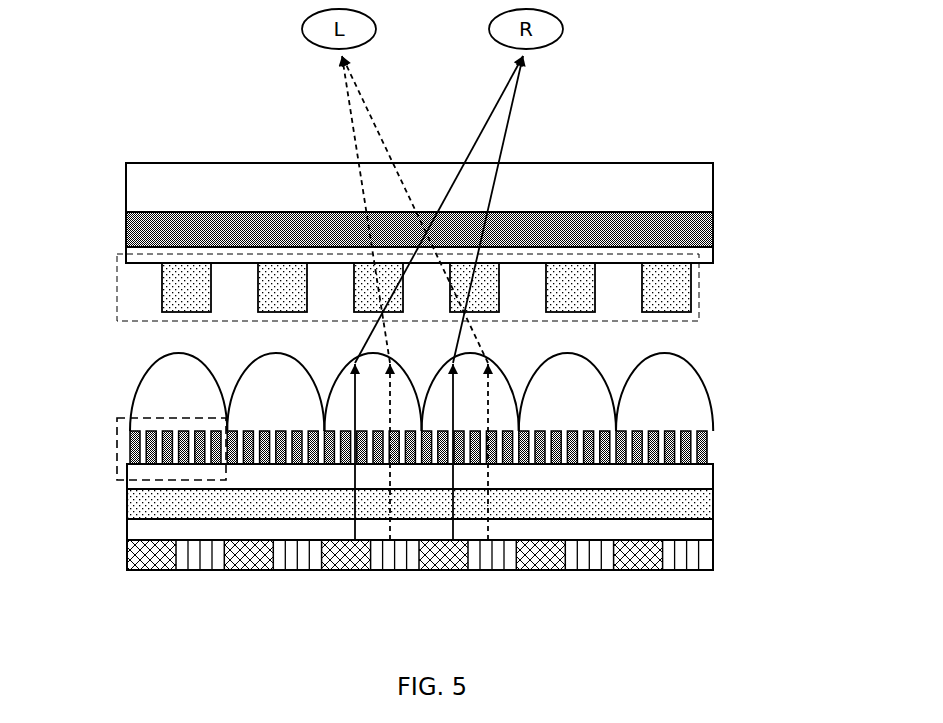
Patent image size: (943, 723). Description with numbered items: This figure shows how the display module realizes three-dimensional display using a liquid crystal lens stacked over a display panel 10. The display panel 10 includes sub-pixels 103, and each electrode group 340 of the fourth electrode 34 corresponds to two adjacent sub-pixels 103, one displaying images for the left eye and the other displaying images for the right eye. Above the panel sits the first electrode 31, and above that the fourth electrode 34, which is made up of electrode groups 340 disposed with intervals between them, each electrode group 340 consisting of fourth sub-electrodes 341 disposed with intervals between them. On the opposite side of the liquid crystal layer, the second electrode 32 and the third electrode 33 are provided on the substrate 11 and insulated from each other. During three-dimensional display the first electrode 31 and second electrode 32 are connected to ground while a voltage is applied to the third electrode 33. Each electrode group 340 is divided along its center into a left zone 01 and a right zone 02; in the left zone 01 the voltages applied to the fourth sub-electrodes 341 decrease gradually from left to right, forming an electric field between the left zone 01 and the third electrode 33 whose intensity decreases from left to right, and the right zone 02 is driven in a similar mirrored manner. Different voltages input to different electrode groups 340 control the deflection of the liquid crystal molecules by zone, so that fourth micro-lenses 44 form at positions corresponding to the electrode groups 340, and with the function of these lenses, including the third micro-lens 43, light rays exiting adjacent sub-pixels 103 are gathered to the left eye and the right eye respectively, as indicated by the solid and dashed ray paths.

The substrate 11 is at (680, 191).
The third electrode 33 is at (690, 232).
The second electrode 32 is at (700, 296).
The fourth micro-lens 44 is at (155, 393).
The third micro-lens 43 is at (690, 403).
The fourth electrode 34 is at (405, 431).
The electrode group 340 is at (115, 428).
The fourth sub-electrode 341 is at (128, 450).
The left zone 01 is at (272, 427).
The right zone 02 is at (317, 427).
The first electrode 31 is at (712, 500).
The display panel 10 is at (445, 589).
The sub-pixel 103 is at (155, 571).